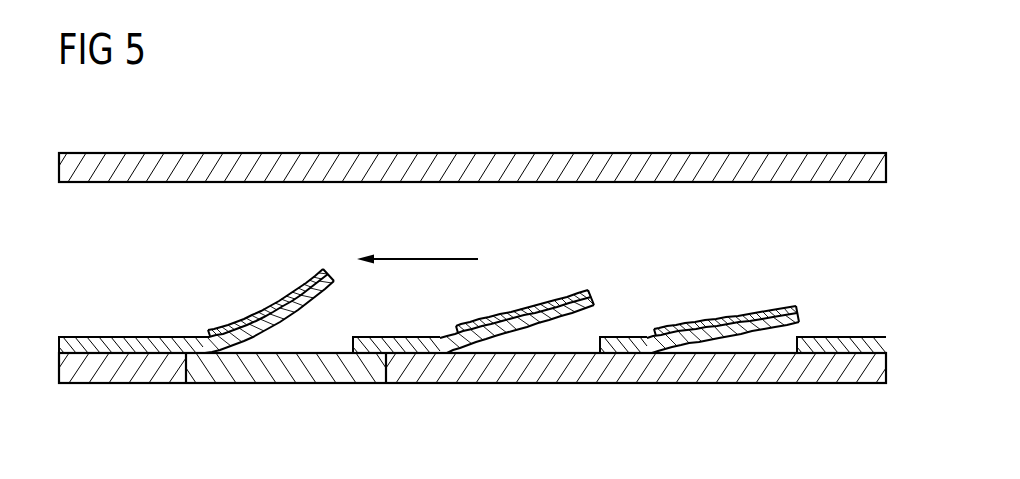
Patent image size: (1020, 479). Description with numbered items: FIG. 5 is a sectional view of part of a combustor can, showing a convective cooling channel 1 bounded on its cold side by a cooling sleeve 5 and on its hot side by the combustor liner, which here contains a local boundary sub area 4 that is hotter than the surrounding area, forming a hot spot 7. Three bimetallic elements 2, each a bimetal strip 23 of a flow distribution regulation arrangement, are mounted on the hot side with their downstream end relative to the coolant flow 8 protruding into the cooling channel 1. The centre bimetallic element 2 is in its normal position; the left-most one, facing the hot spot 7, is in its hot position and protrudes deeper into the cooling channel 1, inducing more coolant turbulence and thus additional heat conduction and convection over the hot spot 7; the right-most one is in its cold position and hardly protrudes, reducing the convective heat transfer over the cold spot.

The cooling channel 1 is at (98, 258).
The bimetallic element 2 is at (472, 298).
The bimetal strip 23 is at (295, 302).
The local boundary sub area 4 is at (472, 398).
The hot spot 7 is at (288, 376).
The cooling sleeve 5 is at (341, 162).
The coolant flow 8 is at (433, 259).